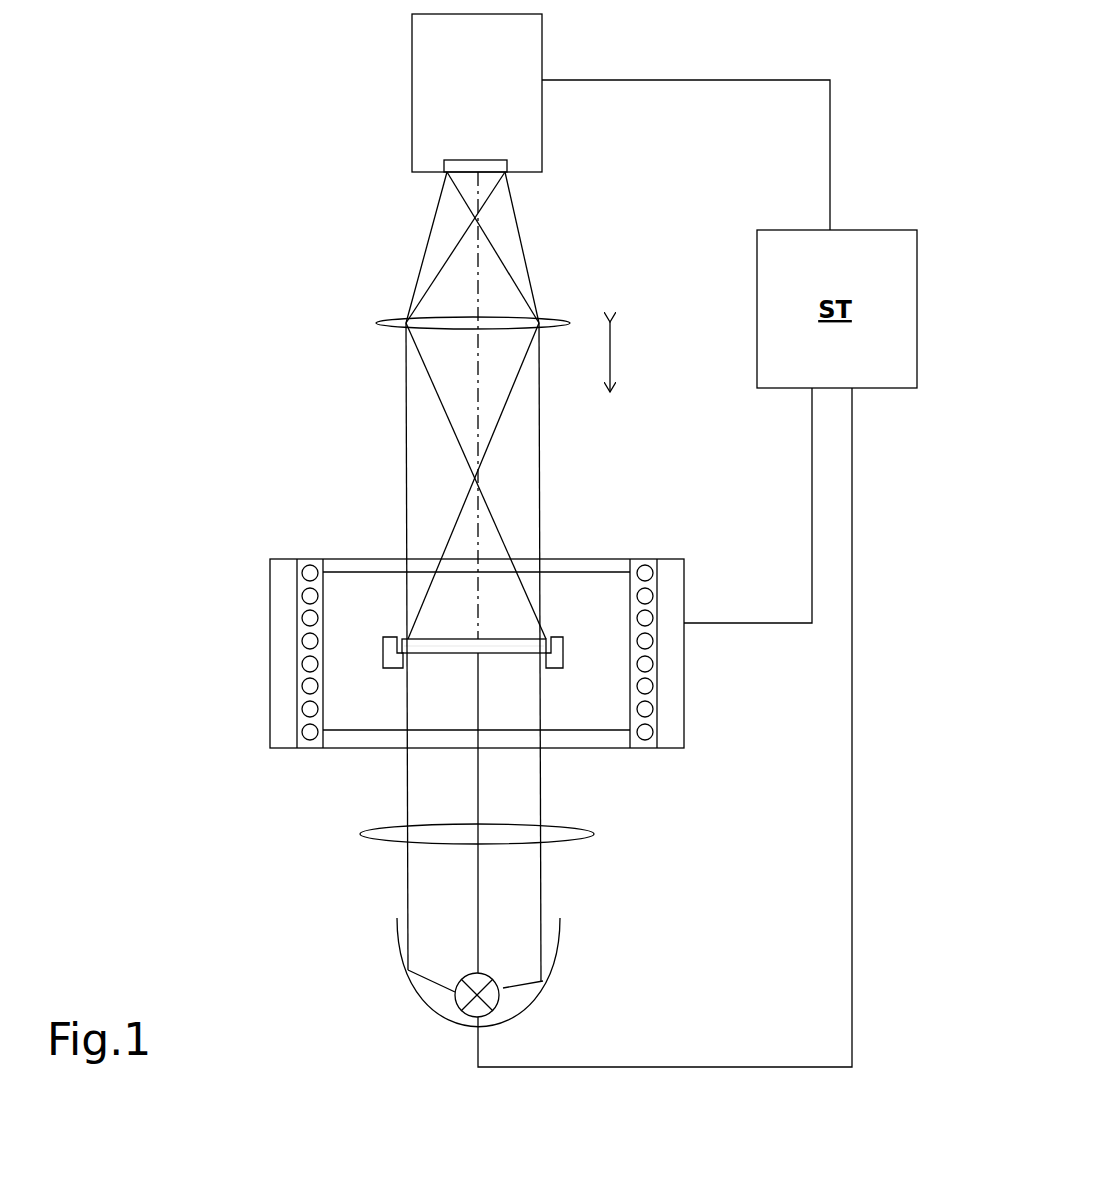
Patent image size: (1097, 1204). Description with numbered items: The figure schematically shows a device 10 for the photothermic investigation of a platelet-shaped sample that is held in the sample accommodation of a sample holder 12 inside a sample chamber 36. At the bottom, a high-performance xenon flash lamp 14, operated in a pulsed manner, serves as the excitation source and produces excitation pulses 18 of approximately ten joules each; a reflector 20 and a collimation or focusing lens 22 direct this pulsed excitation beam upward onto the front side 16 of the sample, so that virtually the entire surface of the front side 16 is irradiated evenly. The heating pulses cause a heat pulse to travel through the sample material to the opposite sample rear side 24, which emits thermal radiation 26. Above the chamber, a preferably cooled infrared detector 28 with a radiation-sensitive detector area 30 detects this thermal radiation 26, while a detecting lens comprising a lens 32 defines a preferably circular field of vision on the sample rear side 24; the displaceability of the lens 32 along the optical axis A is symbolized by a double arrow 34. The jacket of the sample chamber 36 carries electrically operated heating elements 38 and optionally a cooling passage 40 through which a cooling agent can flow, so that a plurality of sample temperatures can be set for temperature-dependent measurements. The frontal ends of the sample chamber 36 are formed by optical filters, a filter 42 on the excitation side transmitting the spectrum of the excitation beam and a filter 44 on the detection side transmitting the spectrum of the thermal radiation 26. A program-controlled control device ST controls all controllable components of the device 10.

The device 10 is at (241, 218).
The sample holder 12 is at (396, 622).
The xenon flash lamp 14 is at (495, 1000).
The front side 16 is at (448, 656).
The excitation pulses 18 is at (513, 848).
The reflector 20 is at (558, 953).
The collimation or focusing lens 22 is at (578, 836).
The sample rear side 24 is at (432, 636).
The thermal radiation 26 is at (528, 364).
The infrared detector 28 is at (555, 42).
The detector area 30 is at (476, 164).
The lens 32 is at (548, 320).
The double arrow 34 is at (615, 355).
The sample chamber 36 is at (479, 653).
The heating elements 38 is at (310, 641).
The cooling passage 40 is at (668, 723).
The optical filter 42 is at (363, 745).
The optical filter 44 is at (365, 567).
The optical axis A is at (477, 384).